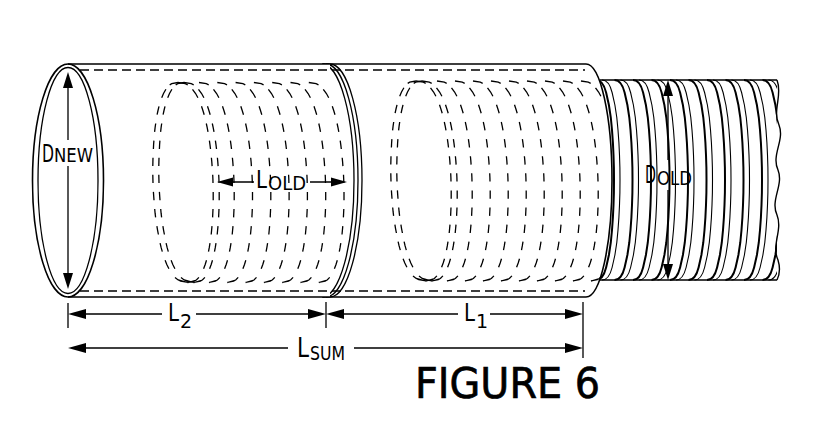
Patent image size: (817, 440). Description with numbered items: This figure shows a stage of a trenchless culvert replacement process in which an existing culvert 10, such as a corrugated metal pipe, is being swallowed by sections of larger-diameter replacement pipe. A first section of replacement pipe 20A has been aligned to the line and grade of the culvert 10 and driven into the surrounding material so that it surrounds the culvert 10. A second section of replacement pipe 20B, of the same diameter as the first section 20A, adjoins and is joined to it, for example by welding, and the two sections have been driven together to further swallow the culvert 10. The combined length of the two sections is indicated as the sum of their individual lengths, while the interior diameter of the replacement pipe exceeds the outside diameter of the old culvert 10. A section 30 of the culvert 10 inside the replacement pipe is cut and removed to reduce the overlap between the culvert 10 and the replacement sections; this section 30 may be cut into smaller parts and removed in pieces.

The culvert 10 is at (697, 80).
The first section of replacement pipe 20A is at (438, 64).
The second section of replacement pipe 20B is at (189, 152).
The section of the culvert 30 is at (283, 220).